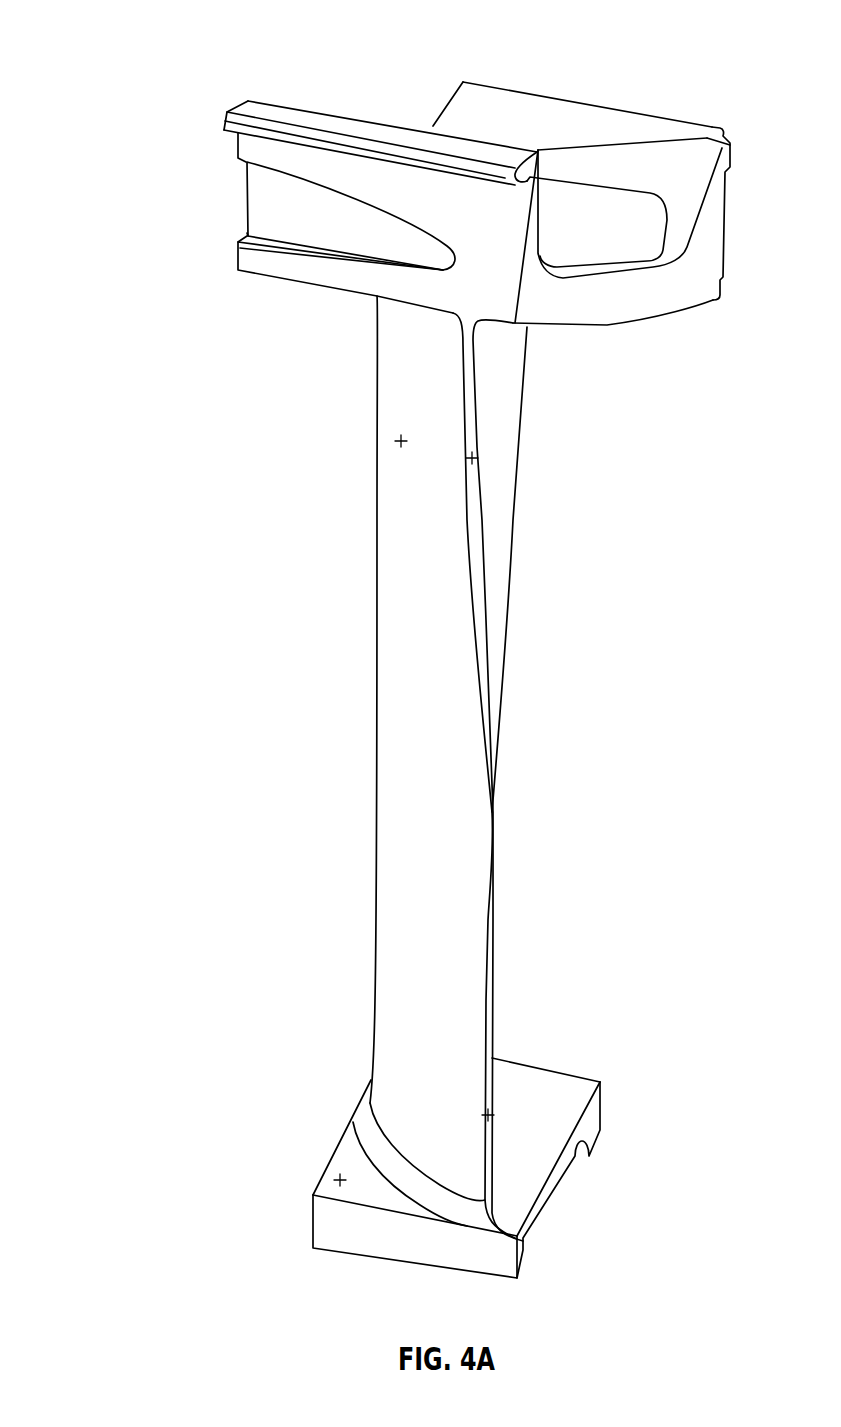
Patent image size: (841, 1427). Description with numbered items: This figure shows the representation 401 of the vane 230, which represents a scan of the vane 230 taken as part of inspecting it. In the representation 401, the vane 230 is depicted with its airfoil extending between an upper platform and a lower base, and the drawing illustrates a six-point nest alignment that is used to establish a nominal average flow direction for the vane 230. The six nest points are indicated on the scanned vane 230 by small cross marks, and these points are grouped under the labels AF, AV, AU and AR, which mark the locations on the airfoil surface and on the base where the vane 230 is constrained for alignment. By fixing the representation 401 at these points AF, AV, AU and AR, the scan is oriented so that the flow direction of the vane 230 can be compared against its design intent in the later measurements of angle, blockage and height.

The representation 401 is at (125, 31).
The vane 230 is at (239, 212).
The forward direction axis AF is at (356, 426).
The vertical direction axis AV is at (524, 467).
The upper direction axis AU is at (532, 1067).
The radial direction axis AR is at (312, 1155).